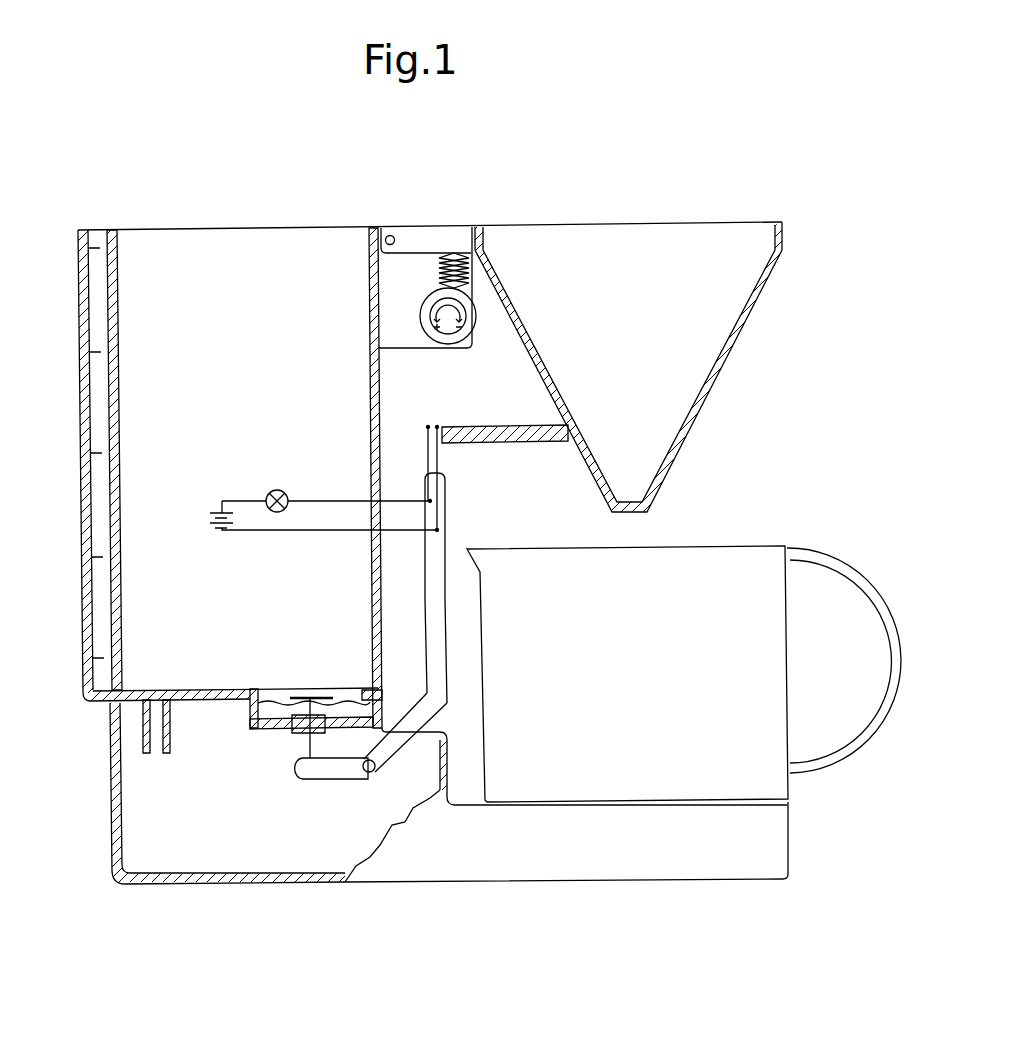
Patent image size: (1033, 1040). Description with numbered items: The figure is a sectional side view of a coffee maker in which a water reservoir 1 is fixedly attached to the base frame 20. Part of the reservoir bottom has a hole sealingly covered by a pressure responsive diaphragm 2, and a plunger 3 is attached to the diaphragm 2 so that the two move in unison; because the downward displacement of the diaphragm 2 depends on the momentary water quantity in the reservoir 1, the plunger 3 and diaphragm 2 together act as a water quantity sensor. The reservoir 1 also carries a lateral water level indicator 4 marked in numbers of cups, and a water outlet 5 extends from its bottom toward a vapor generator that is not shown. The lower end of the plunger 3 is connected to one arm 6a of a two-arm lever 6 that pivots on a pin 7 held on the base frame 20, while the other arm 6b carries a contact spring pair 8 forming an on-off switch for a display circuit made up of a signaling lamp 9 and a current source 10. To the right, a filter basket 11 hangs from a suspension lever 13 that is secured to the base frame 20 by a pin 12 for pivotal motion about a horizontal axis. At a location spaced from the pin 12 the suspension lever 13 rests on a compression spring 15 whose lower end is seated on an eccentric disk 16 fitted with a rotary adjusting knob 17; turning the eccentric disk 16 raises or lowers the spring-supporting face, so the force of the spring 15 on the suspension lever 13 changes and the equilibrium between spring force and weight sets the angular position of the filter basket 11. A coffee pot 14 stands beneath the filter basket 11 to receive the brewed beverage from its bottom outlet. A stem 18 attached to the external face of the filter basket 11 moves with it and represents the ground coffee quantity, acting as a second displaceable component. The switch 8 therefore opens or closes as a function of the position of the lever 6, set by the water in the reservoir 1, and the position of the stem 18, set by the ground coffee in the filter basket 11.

The water reservoir 1 is at (248, 250).
The pressure responsive diaphragm 2 is at (303, 697).
The plunger 3 is at (307, 747).
The water level indicator 4 is at (89, 262).
The water outlet 5 is at (155, 747).
The two-arm lever 6 is at (438, 548).
The arm of the lever 6a is at (330, 770).
The other arm of the lever 6b is at (438, 660).
The pin 7 is at (365, 772).
The contact spring pair 8 is at (427, 440).
The signaling lamp 9 is at (272, 490).
The current source 10 is at (215, 532).
The filter basket 11 is at (707, 245).
The pin 12 is at (391, 233).
The suspension lever 13 is at (432, 238).
The coffee pot 14 is at (727, 562).
The compression spring 15 is at (483, 245).
The eccentric disk 16 is at (468, 308).
The rotary adjusting knob 17 is at (448, 323).
The stem 18 is at (513, 432).
The base frame 20 is at (110, 810).